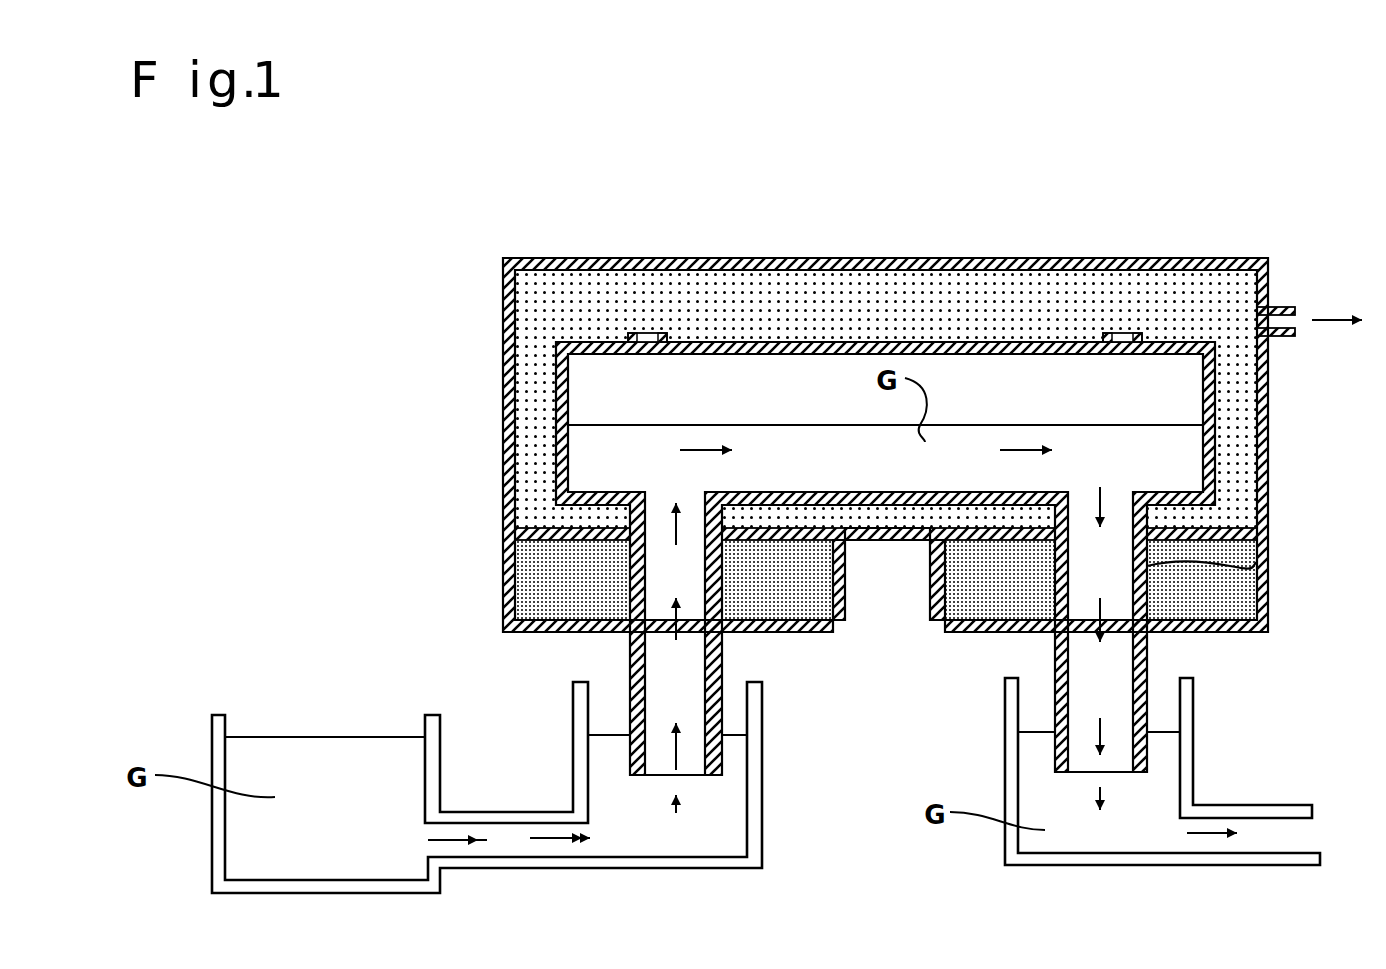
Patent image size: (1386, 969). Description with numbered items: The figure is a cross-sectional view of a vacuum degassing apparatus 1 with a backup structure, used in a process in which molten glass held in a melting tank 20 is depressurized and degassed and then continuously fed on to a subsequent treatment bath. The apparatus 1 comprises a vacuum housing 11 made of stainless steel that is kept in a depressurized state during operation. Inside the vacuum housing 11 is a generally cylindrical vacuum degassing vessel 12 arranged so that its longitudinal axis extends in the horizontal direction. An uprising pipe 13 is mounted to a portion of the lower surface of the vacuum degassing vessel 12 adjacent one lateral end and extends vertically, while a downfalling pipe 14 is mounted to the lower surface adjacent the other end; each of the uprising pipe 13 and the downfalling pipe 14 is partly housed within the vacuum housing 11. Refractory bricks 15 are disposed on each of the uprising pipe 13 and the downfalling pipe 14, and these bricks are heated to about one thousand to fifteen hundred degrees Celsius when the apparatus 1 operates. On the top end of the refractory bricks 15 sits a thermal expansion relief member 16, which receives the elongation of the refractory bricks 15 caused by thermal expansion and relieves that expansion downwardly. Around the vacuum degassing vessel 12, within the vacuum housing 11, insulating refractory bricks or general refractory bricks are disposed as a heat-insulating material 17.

The vacuum degassing apparatus 1 is at (1068, 186).
The vacuum housing 11 is at (725, 258).
The vacuum degassing vessel 12 is at (795, 347).
The uprising pipe 13 is at (772, 631).
The downfalling pipe 14 is at (1262, 565).
The refractory bricks 15 is at (510, 583).
The thermal expansion relief member 16 is at (510, 532).
The heat-insulating material 17 is at (925, 310).
The melting tank 20 is at (212, 725).